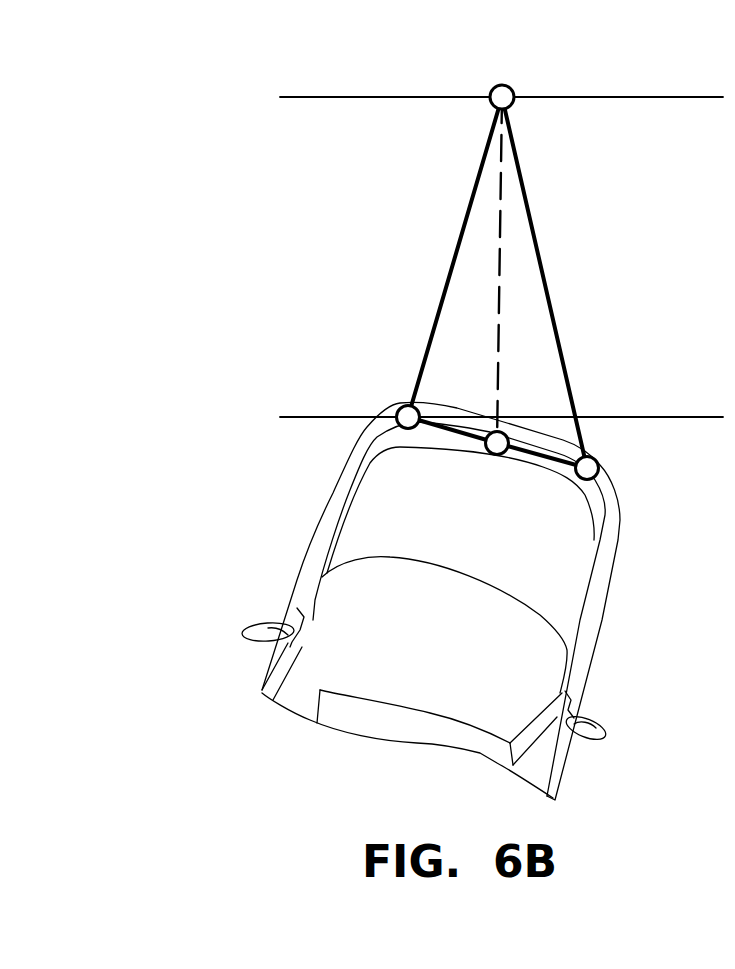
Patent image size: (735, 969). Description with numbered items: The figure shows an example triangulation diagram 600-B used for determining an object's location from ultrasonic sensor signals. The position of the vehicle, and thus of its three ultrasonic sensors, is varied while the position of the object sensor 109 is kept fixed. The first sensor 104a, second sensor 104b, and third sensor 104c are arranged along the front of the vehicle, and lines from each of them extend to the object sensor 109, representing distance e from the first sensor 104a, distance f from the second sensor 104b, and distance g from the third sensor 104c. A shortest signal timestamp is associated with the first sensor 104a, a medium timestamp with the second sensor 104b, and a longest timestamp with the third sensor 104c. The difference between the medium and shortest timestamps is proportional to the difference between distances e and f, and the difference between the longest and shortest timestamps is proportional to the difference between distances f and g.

The triangulation diagram 600-B is at (676, 48).
The object sensor 109 is at (498, 85).
The first sensor 104a is at (405, 406).
The second sensor 104b is at (502, 431).
The third sensor 104c is at (590, 456).